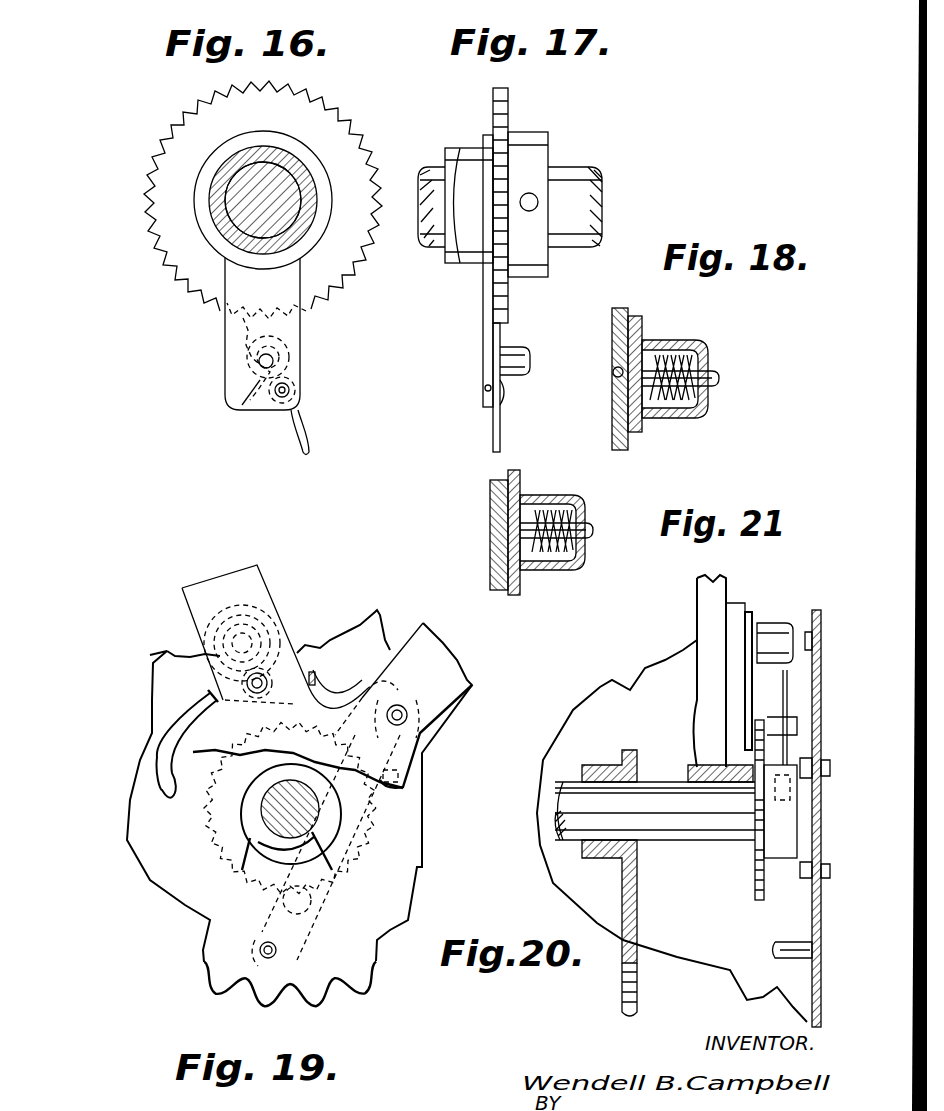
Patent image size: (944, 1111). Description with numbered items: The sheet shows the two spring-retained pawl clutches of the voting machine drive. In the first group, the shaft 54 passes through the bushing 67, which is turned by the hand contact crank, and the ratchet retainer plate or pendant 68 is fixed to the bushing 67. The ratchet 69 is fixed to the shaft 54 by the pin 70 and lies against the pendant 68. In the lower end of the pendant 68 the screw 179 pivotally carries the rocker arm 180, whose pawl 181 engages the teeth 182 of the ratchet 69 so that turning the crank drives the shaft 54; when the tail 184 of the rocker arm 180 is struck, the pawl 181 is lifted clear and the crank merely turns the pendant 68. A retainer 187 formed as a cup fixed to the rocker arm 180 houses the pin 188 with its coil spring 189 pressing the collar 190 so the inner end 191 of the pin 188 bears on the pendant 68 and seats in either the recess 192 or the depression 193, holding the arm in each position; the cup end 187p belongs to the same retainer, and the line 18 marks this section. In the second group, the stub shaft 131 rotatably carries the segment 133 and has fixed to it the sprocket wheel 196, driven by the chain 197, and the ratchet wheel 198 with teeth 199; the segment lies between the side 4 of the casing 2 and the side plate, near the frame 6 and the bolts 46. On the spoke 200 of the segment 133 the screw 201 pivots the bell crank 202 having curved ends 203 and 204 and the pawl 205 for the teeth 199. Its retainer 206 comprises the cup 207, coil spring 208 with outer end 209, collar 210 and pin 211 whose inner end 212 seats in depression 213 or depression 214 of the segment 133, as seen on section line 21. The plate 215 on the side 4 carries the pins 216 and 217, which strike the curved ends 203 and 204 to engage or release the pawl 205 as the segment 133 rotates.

In FIG. 19, the casing 2 is at (398, 883).
In FIG. 20, the casing 2 is at (600, 703).
In FIG. 19, the side of the casing 4 is at (167, 922).
In FIG. 20, the side of the casing 4 is at (812, 625).
In FIG. 20, the frame member 6 is at (638, 685).
In FIG. 17, the section line 18- 18 is at (543, 360).
In FIG. 20, the section line 21- 21 is at (807, 642).
In FIG. 19, the bolts 46 is at (307, 918).
In FIG. 20, the bolts 46 is at (812, 972).
In FIG. 16, the shaft 54 is at (228, 228).
In FIG. 17, the shaft 54 is at (432, 170).
In FIG. 16, the bushing 67 is at (208, 215).
In FIG. 17, the bushing 67 is at (460, 264).
In FIG. 16, the ratchet retainer plate or pendant 68 is at (225, 352).
In FIG. 17, the ratchet retainer plate or pendant 68 is at (483, 322).
In FIG. 18, the ratchet retainer plate or pendant 68 is at (612, 434).
In FIG. 16, the ratchet 69 is at (172, 160).
In FIG. 17, the ratchet 69 is at (509, 108).
In FIG. 17, the pin 70 is at (534, 194).
In FIG. 19, the stub shaft 131 is at (263, 775).
In FIG. 20, the stub shaft 131 is at (658, 782).
In FIG. 21, the wheel or segment 133 is at (490, 490).
In FIG. 19, the wheel or segment 133 is at (263, 581).
In FIG. 20, the wheel or segment 133 is at (697, 593).
In FIG. 16, the screw 179 is at (298, 390).
In FIG. 17, the screw 179 is at (513, 402).
In FIG. 16, the pawl member or rocker arm 180 is at (493, 446).
In FIG. 18, the pawl member or rocker arm 180 is at (636, 433).
In FIG. 16, the pawl 181 is at (243, 328).
In FIG. 16, the teeth 182 is at (157, 250).
In FIG. 16, the tail or lower end 184 is at (306, 457).
In FIG. 16, the retainer (cup) 187 is at (285, 355).
In FIG. 17, the retainer (cup) 187 is at (512, 345).
In FIG. 18, the retainer (cup) 187 is at (660, 345).
In FIG. 18, the housing end 187p is at (703, 412).
In FIG. 18, the pin 188 is at (720, 379).
In FIG. 18, the coil spring 189 is at (703, 346).
In FIG. 18, the collar 190 is at (652, 342).
In FIG. 18, the inner end of the pin 191 is at (612, 382).
In FIG. 16, the recess or depression 192 is at (272, 363).
In FIG. 18, the recess or depression 192 is at (614, 370).
In FIG. 16, the depression 193 is at (231, 411).
In FIG. 18, the depression 193 is at (612, 404).
In FIG. 19, the sprocket wheel 196 is at (357, 970).
In FIG. 20, the sprocket wheel 196 is at (637, 930).
In FIG. 19, the chain 197 is at (240, 862).
In FIG. 19, the ratchet wheel 198 is at (372, 822).
In FIG. 20, the ratchet wheel 198 is at (755, 884).
In FIG. 19, the teeth 199 is at (372, 840).
In FIG. 19, the spoke 200 is at (203, 598).
In FIG. 19, the screw 201 is at (245, 679).
In FIG. 21, the rocker arm or bell crank 202 is at (518, 588).
In FIG. 19, the rocker arm or bell crank 202 is at (168, 734).
In FIG. 19, the curved end 203 is at (420, 740).
In FIG. 19, the curved end 204 is at (170, 797).
In FIG. 19, the pawl 205 is at (378, 695).
In FIG. 21, the retainer 206 is at (583, 505).
In FIG. 19, the retainer 206 is at (290, 657).
In FIG. 20, the retainer 206 is at (777, 623).
In FIG. 21, the cup 207 is at (585, 516).
In FIG. 21, the coil spring 208 is at (575, 497).
In FIG. 21, the outer end of coil spring 209 is at (584, 553).
In FIG. 21, the collar 210 is at (530, 500).
In FIG. 21, the pin 211 is at (594, 531).
In FIG. 21, the inner end of the pin 212 is at (496, 524).
In FIG. 21, the depression 213 is at (513, 540).
In FIG. 21, the depression 214 is at (492, 582).
In FIG. 21, the plate 215 is at (491, 562).
In FIG. 19, the plate 215 is at (262, 925).
In FIG. 20, the plate 215 is at (805, 878).
In FIG. 19, the pin 216 is at (425, 722).
In FIG. 20, the pin 216 is at (757, 735).
In FIG. 19, the pin 217 is at (277, 958).
In FIG. 20, the pin 217 is at (775, 952).